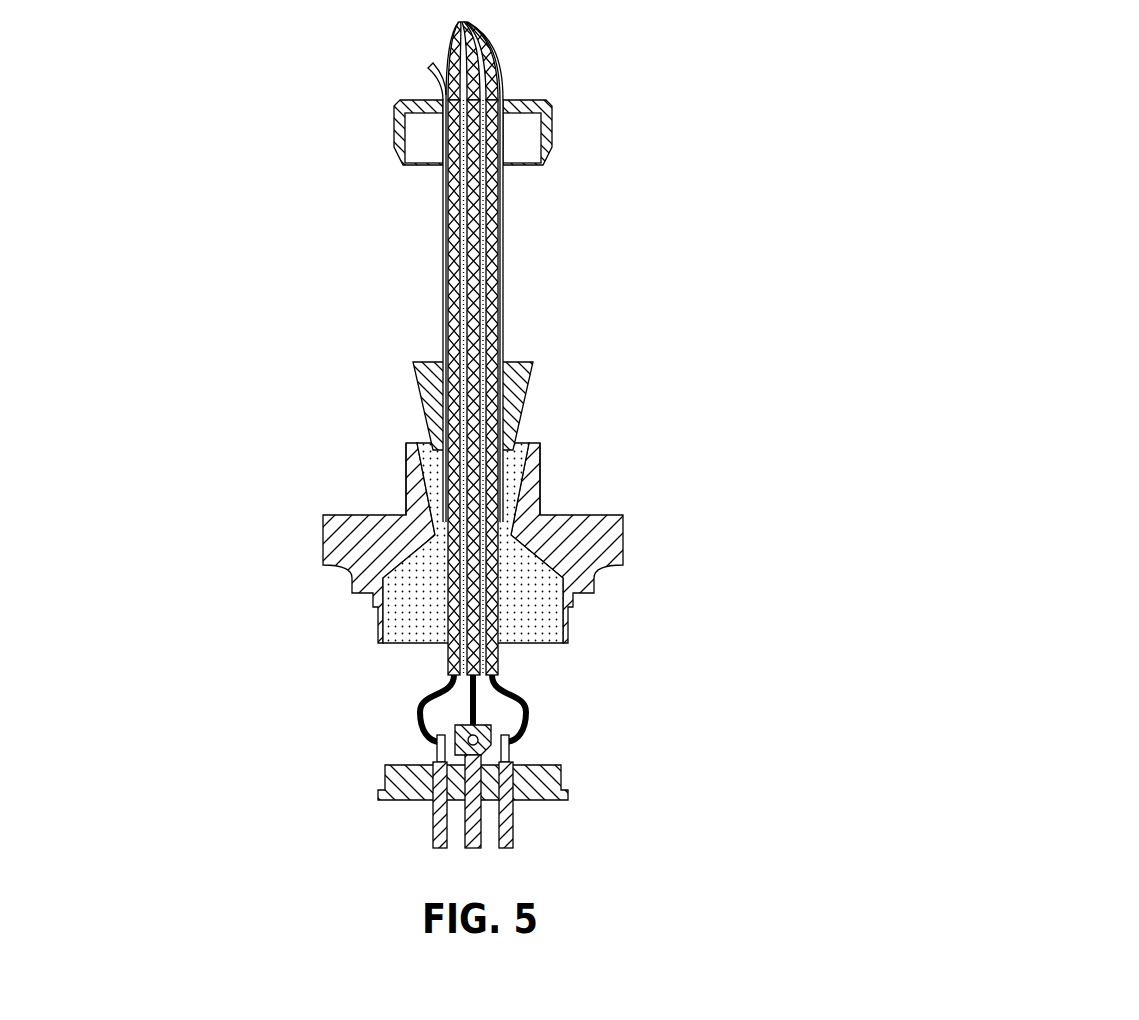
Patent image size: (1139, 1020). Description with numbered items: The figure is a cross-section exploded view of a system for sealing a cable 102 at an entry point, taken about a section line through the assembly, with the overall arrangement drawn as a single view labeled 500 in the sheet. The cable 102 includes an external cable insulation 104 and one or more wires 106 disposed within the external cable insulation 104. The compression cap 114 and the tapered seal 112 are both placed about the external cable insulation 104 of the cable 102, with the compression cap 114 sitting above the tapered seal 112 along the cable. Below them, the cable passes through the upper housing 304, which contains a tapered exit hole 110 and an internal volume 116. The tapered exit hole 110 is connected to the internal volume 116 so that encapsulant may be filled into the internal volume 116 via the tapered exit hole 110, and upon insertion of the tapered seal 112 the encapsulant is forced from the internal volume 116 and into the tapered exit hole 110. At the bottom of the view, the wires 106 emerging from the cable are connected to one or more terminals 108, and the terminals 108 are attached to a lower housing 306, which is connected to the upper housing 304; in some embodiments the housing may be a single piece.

The cable 102 is at (461, 345).
The external cable insulation 104 is at (443, 192).
The wires 106 is at (492, 224).
The terminals 108 is at (510, 746).
The tapered exit hole 110 is at (410, 475).
The tapered seal 112 is at (522, 405).
The compression cap 114 is at (553, 128).
The internal volume 116 is at (403, 558).
The upper housing 304 is at (623, 538).
The lower housing 306 is at (568, 793).
The connector assembly 500 is at (1015, 90).